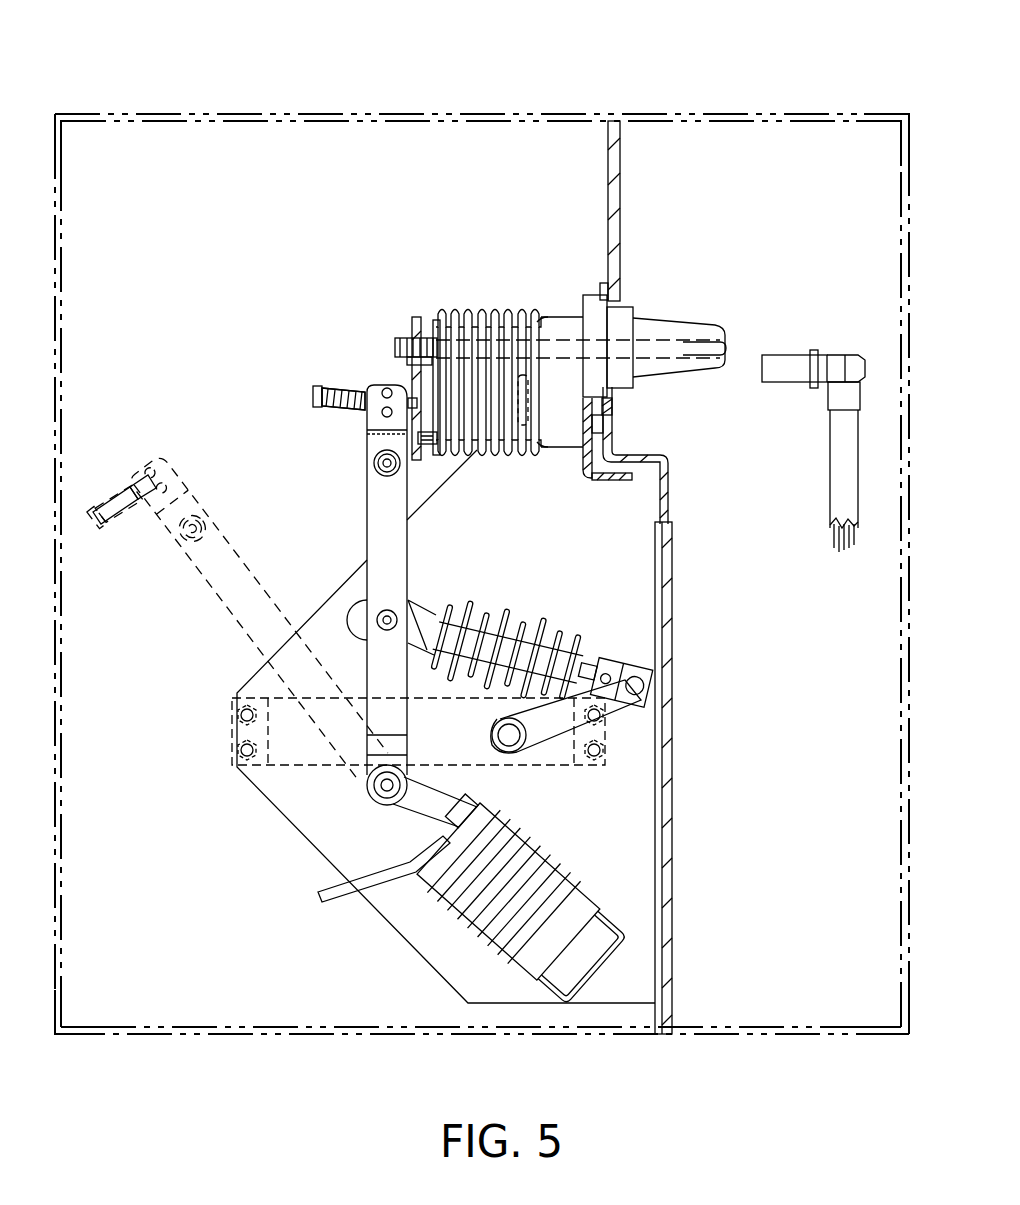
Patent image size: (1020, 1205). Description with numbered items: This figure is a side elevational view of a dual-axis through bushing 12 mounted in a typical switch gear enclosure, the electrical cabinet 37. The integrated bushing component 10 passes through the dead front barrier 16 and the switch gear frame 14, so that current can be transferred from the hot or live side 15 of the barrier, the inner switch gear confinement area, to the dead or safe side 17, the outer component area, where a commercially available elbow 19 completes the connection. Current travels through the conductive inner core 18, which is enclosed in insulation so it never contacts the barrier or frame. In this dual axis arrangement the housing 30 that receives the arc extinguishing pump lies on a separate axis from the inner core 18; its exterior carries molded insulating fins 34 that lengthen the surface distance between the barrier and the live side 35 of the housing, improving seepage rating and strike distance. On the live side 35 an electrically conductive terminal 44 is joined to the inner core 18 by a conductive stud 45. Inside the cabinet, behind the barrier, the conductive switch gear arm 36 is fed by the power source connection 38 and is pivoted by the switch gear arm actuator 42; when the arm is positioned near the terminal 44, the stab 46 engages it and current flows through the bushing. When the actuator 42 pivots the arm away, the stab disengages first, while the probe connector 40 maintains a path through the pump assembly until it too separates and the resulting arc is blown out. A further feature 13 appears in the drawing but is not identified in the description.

The integrated bushing component 10 is at (566, 292).
The through bushing 12 is at (667, 314).
The terminal 13 is at (728, 318).
The switch gear frame 14 is at (597, 485).
The live side 15 is at (499, 140).
The dead front barrier 16 is at (618, 215).
The safe side 17 is at (694, 148).
The inner core 18 is at (668, 383).
The elbow 19 is at (790, 362).
The housing 30 is at (508, 458).
The fins 34 is at (535, 312).
The live side 35 is at (466, 308).
The switch gear arm 36 is at (382, 505).
The electrical cabinet 37 is at (172, 100).
The power source connection 38 is at (330, 882).
The probe connector 40 is at (193, 470).
The switch gear arm actuator 42 is at (552, 725).
The terminal 44 is at (417, 315).
The conductive stud 45 is at (397, 345).
The stab 46 is at (368, 446).